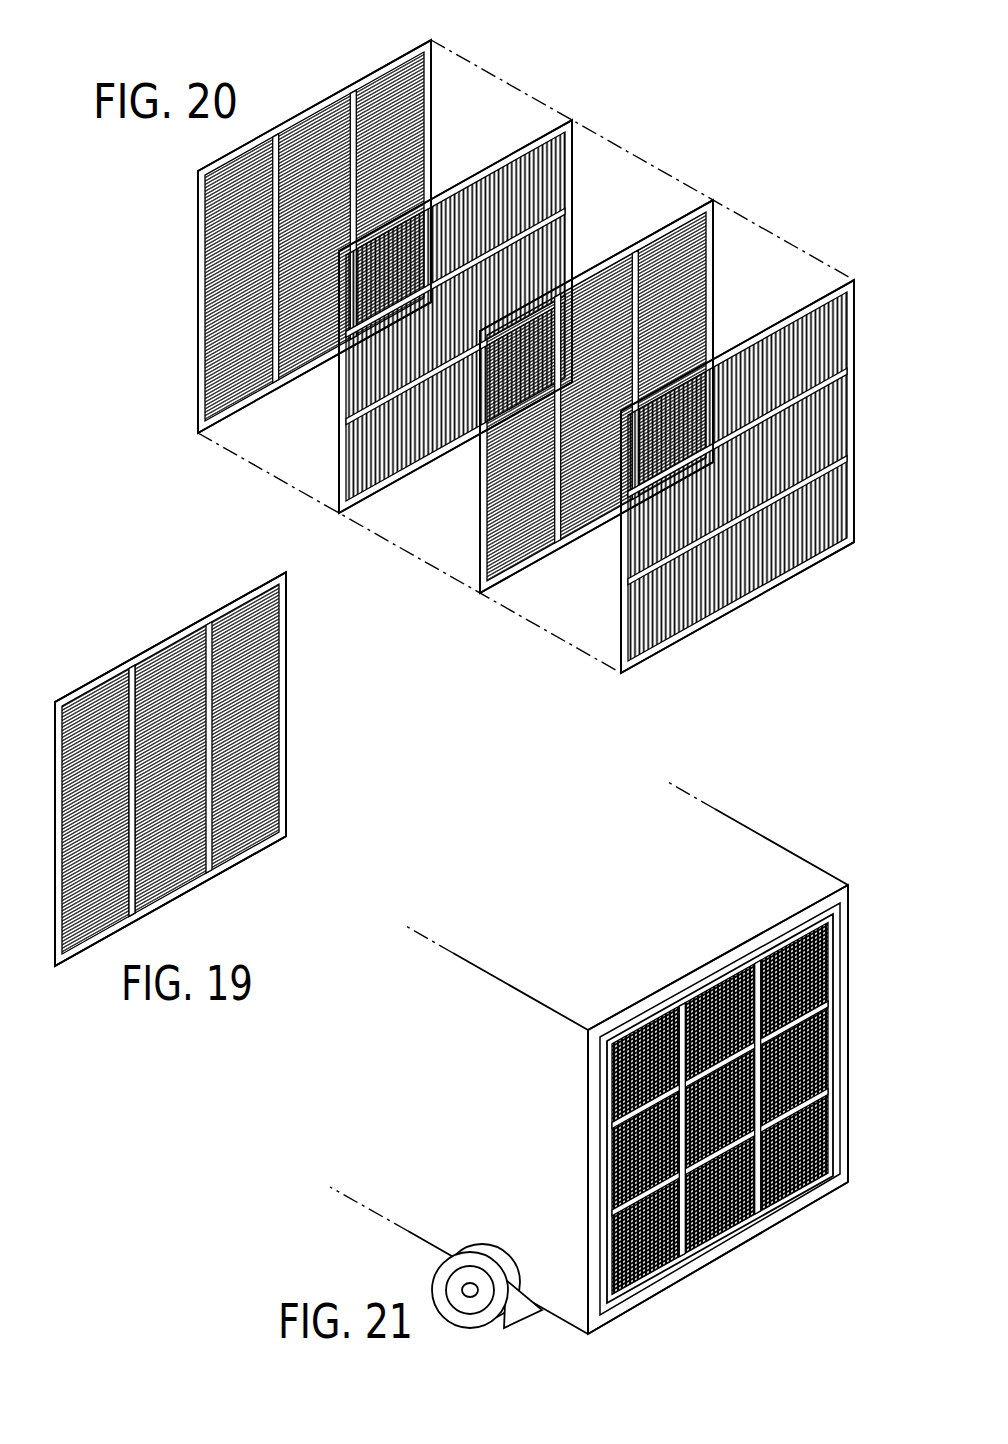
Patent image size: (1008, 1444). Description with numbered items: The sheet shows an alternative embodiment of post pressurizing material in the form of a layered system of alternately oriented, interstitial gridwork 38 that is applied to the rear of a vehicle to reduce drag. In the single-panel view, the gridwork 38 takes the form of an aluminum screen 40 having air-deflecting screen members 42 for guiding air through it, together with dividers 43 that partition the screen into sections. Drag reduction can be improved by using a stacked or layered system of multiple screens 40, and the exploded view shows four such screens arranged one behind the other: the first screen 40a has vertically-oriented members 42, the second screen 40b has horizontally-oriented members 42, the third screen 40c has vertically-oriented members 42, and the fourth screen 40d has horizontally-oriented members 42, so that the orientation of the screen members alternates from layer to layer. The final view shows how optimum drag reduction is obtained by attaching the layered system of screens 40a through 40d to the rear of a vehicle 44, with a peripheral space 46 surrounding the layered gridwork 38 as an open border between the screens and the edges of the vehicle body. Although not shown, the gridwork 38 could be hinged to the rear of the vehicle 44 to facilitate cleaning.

In FIG. 19, the gridwork 38 is at (178, 592).
In FIG. 21, the gridwork 38 is at (808, 1150).
In FIG. 19, the aluminum screen 40 is at (293, 745).
In FIG. 20, the first screen 40a is at (857, 405).
In FIG. 20, the second screen 40b is at (724, 285).
In FIG. 20, the third screen 40c is at (580, 196).
In FIG. 20, the fourth screen 40d is at (440, 125).
In FIG. 20, the air-deflecting screen members 42 is at (394, 46).
In FIG. 19, the air-deflecting screen members 42 is at (275, 650).
In FIG. 19, the dividers 43 is at (130, 655).
In FIG. 21, the vehicle 44 is at (763, 857).
In FIG. 21, the peripheral space 46 is at (698, 975).